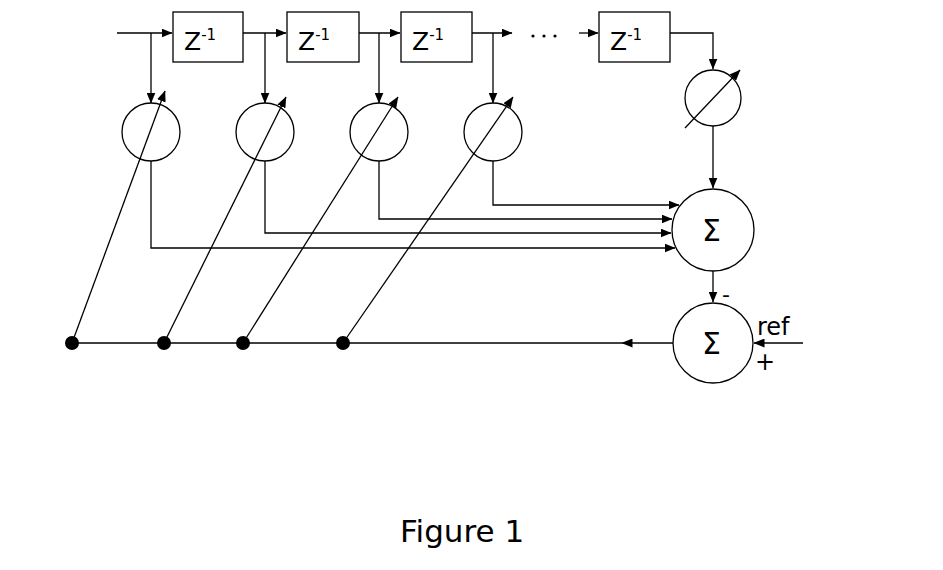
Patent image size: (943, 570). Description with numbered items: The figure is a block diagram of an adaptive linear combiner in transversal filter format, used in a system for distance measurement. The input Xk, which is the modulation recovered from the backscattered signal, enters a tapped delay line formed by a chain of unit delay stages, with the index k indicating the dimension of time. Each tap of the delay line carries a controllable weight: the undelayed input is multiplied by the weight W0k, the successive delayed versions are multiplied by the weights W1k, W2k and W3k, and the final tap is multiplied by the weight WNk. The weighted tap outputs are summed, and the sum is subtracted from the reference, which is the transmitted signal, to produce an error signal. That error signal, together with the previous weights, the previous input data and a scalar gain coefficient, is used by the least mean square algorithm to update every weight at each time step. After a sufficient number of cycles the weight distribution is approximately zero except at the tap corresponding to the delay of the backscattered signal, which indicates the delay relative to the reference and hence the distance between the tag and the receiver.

The input Xk is at (132, 16).
The weight W0k is at (373, 217).
The weight W1k is at (417, 220).
The weight W2k is at (457, 220).
The weight W3k is at (511, 220).
The weight WNk is at (727, 129).